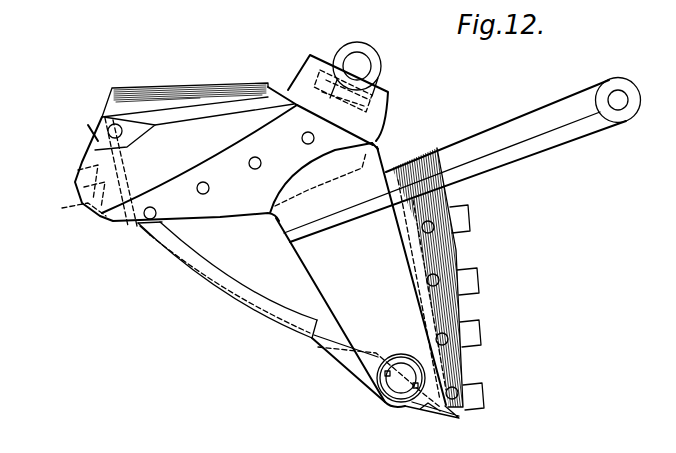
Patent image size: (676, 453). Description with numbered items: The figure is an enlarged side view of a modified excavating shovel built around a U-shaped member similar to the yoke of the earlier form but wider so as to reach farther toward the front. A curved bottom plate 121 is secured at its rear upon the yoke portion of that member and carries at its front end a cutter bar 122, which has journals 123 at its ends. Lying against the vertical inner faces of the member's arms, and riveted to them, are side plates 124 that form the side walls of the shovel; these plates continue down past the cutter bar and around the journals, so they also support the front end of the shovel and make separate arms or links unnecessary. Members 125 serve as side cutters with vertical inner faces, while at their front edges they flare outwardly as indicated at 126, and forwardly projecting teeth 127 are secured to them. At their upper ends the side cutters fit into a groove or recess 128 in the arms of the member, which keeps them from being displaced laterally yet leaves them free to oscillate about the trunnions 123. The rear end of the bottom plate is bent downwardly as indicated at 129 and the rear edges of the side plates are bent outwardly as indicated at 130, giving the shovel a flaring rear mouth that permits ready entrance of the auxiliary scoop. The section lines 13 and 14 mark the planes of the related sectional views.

The section line 13- 13 is at (68, 233).
The section line 14- 14 is at (420, 425).
The curved bottom plate 121 is at (143, 235).
The cutter bar 122 is at (363, 370).
The journals 123 is at (398, 382).
The side plates 124 is at (426, 259).
The side cutter members 125 is at (217, 185).
The outwardly flaring front edge 126 is at (463, 307).
The forwardly projecting teeth 127 is at (474, 280).
The groove or recess 128 is at (379, 143).
The downwardly bent rear end 129 is at (88, 131).
The outwardly bent rear edges 130 is at (138, 96).